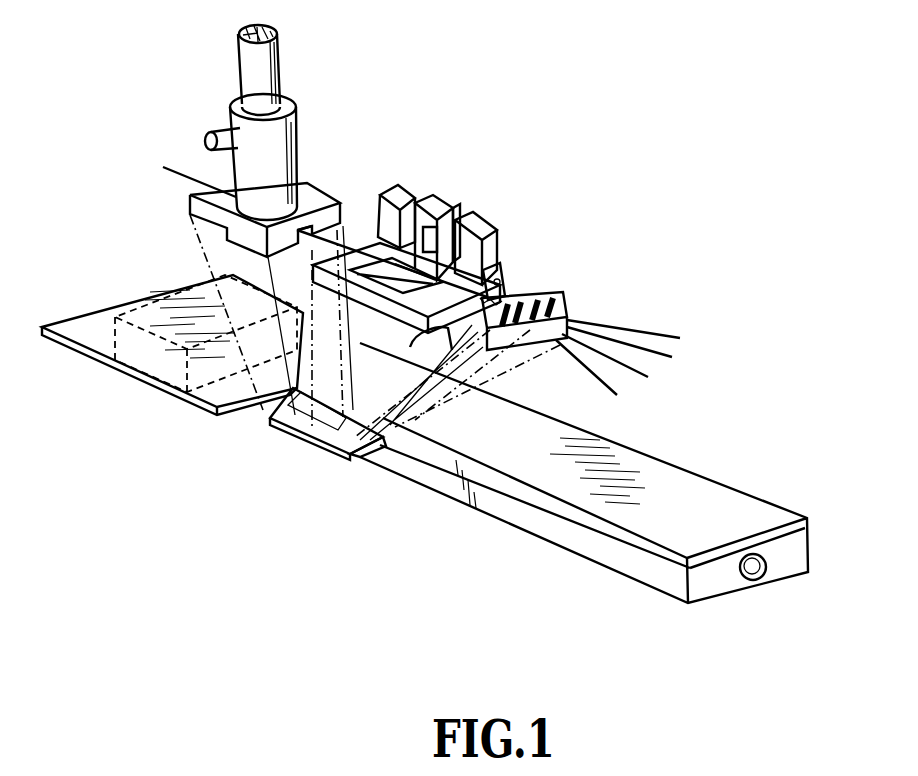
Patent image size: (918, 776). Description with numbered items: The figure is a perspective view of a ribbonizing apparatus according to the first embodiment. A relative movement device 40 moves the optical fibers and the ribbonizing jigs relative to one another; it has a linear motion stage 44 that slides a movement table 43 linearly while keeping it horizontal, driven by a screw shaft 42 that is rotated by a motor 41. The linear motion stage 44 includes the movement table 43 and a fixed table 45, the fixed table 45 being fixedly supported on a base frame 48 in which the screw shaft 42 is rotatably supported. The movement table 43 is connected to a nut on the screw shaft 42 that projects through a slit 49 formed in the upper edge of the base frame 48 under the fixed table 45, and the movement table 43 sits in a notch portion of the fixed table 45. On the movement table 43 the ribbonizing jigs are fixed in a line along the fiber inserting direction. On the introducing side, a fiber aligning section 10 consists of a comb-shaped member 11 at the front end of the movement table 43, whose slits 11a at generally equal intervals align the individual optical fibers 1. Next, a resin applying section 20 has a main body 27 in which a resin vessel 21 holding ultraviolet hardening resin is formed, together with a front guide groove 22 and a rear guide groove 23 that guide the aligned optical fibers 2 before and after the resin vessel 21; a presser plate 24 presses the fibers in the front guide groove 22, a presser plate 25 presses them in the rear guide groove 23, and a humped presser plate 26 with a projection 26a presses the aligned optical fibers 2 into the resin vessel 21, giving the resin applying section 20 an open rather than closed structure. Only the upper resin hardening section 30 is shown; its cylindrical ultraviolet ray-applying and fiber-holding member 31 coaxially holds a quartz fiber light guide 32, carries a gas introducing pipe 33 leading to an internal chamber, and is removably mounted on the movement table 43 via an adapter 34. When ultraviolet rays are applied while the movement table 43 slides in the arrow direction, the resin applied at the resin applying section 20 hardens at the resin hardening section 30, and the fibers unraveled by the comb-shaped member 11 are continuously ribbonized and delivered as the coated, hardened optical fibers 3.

The individual optical fibers 1 is at (668, 380).
The aligned optical fibers 2 is at (329, 194).
The ribbonized optical fibers 3 is at (163, 168).
The fiber aligning section 10 is at (662, 260).
The comb-shaped member 11 is at (567, 298).
The slits 11a is at (534, 297).
The resin applying section 20 is at (592, 216).
The resin vessel 21 is at (318, 270).
The front guide groove 22 is at (496, 280).
The rear guide groove 23 is at (378, 236).
The presser plate 24 is at (479, 217).
The presser plate 25 is at (396, 183).
The humped presser plate 26 is at (449, 212).
The projection 26a is at (429, 224).
The main body 27 is at (418, 331).
The resin hardening section 30 is at (345, 113).
The ultraviolet ray-applying and fiber-holding member 31 is at (231, 118).
The quartz fiber light guide 32 is at (264, 57).
The gas introducing pipe 33 is at (208, 140).
The adapter 34 is at (189, 198).
The relative movement device 40 is at (445, 549).
The motor 41 is at (163, 297).
The screw shaft 42 is at (754, 581).
The movement table 43 is at (268, 418).
The linear motion stage 44 is at (359, 463).
The fixed table 45 is at (184, 397).
The base frame 48 is at (562, 544).
The slit 49 is at (538, 493).